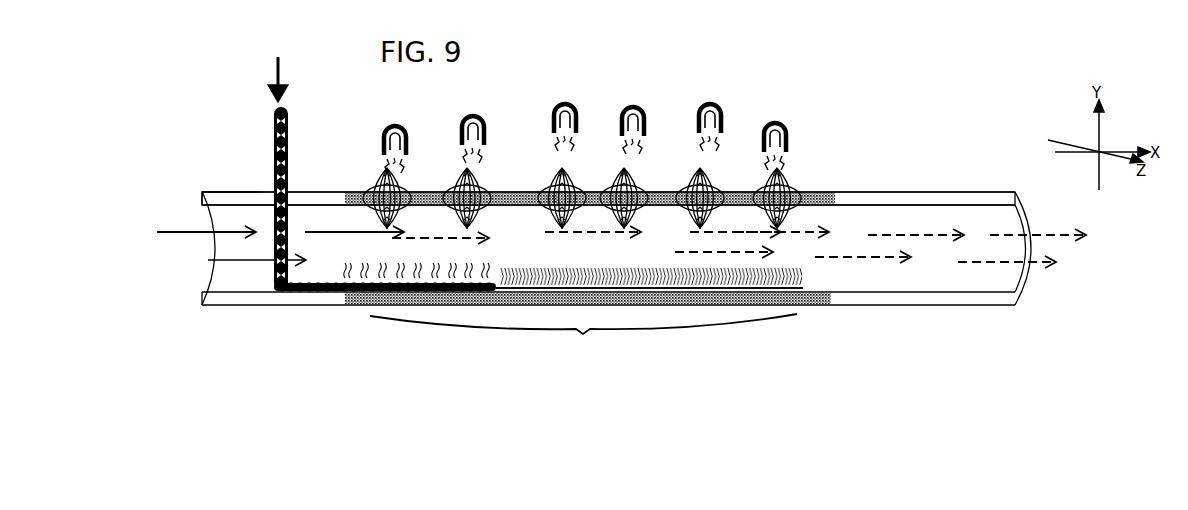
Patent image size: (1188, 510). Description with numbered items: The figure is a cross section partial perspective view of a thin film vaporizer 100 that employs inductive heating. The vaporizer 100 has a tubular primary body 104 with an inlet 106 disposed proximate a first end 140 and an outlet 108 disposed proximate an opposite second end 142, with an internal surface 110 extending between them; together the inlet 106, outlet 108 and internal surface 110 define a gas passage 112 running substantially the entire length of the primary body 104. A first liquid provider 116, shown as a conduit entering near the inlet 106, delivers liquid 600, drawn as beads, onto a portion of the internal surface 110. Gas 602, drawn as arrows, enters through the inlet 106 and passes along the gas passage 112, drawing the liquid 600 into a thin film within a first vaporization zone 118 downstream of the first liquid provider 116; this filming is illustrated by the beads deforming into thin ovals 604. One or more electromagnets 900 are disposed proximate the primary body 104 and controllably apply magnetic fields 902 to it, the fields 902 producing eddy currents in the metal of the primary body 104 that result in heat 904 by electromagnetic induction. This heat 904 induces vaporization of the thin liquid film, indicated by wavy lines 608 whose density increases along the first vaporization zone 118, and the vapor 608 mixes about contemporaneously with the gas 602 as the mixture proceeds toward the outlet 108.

The vaporizer 100 is at (945, 181).
The primary body 104 is at (901, 196).
The inlet 106 is at (207, 270).
The outlet 108 is at (1010, 283).
The internal surface 110 is at (950, 272).
The gas passage 112 is at (894, 285).
The first liquid provider 116 is at (273, 142).
The first vaporization zone 118 is at (583, 337).
The first end 140 is at (198, 192).
The second end 142 is at (1025, 296).
The liquid 600 is at (277, 109).
The gas 602 is at (280, 239).
The thin ovals 604 is at (500, 291).
The wavy lines 608 is at (370, 262).
The electromagnets 900 is at (701, 106).
The magnetic fields 902 is at (790, 178).
The heat 904 is at (832, 298).